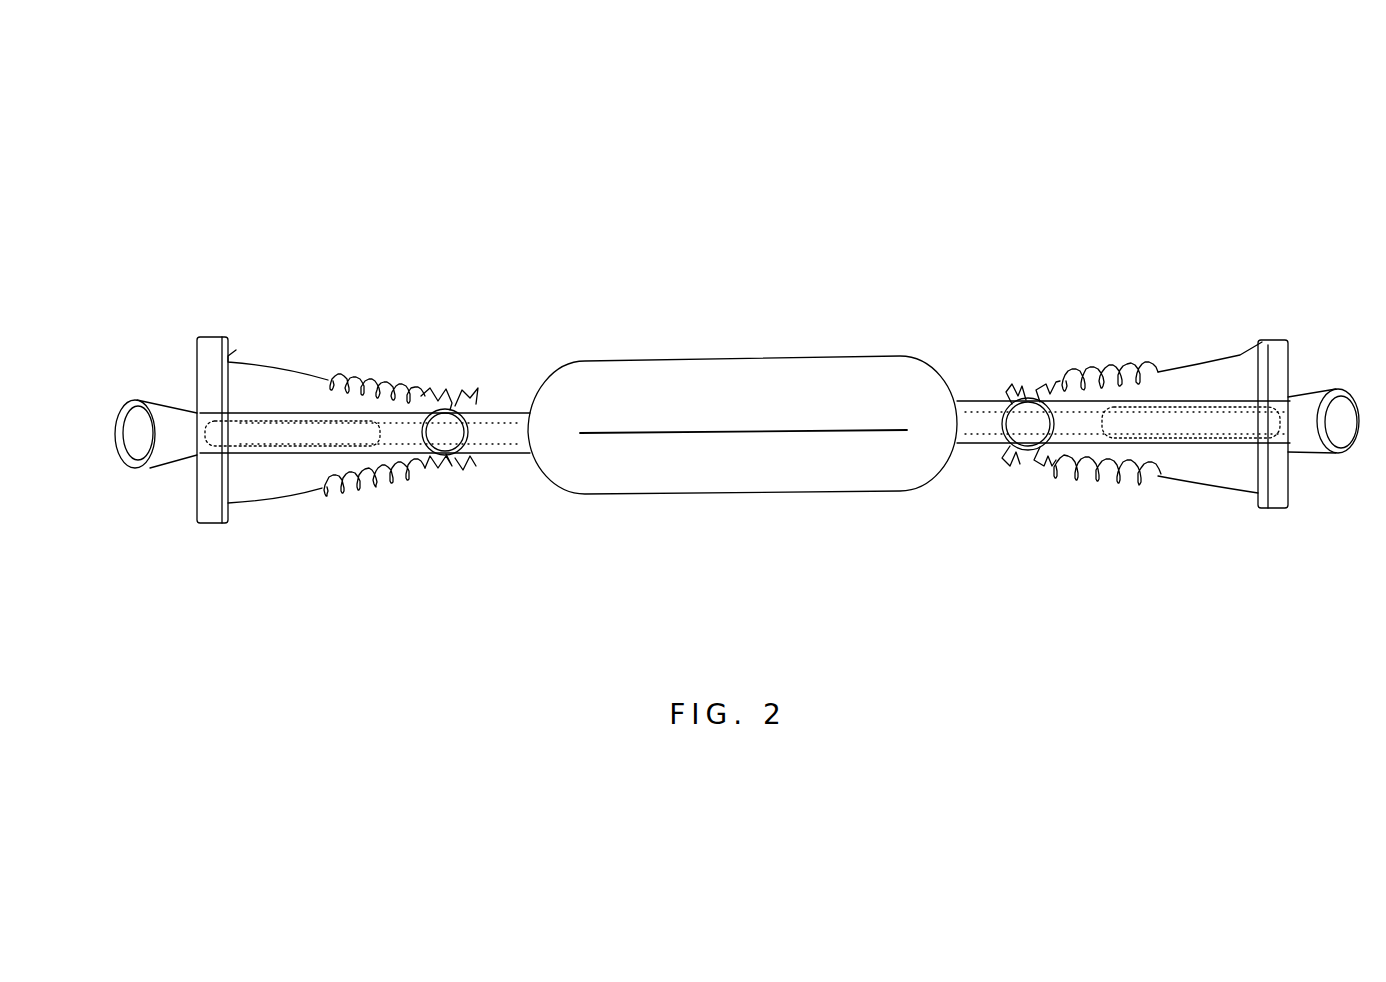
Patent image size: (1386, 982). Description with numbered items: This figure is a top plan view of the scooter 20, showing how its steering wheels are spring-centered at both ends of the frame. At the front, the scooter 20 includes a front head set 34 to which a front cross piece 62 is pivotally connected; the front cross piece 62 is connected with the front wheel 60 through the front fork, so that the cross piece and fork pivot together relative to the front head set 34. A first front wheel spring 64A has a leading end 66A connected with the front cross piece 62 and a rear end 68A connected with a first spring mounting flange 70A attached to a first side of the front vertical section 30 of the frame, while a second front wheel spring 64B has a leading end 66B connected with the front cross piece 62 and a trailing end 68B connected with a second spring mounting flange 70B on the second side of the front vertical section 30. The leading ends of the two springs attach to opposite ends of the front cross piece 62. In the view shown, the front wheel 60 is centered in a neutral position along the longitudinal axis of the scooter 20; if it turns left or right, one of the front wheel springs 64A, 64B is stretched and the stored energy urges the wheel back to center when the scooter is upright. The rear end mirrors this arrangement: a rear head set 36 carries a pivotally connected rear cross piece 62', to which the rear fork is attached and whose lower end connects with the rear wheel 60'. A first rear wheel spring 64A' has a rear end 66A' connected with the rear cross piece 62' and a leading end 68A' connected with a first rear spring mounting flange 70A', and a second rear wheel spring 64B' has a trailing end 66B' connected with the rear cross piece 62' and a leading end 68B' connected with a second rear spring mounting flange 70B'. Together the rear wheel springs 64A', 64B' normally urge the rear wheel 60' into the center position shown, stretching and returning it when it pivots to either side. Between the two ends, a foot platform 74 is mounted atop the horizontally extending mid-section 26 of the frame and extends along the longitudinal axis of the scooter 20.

The scooter 20 is at (805, 265).
The foot platform 74 is at (697, 387).
The horizontally extending mid-section 26 is at (502, 430).
The front vertical section 30 is at (1003, 428).
The rear head set 36 is at (135, 450).
The front head set 34 is at (1338, 418).
The rear cross piece 62' is at (163, 395).
The front cross piece 62 is at (1293, 366).
The rear wheel 60' is at (292, 412).
The front wheel 60 is at (1191, 402).
The rear end of first rear spring 66A' is at (273, 305).
The trailing end of second rear wheel spring 66B' is at (275, 558).
The leading end of first front wheel spring 66A is at (1210, 299).
The leading end of second front wheel spring 66B is at (1208, 529).
The first rear wheel spring 64A' is at (374, 320).
The second rear wheel spring 64B' is at (374, 536).
The first front wheel spring 64A is at (1110, 309).
The second front wheel spring 64B is at (1107, 512).
The leading end of first rear spring 68A' is at (440, 324).
The leading end of second rear wheel spring 68B' is at (459, 526).
The rear end of first front wheel spring 68A is at (1035, 321).
The trailing end of second front wheel spring 68B is at (1029, 505).
The first rear spring mounting flange 70A' is at (508, 328).
The second rear spring mounting flange 70B' is at (518, 504).
The first spring mounting flange 70A is at (981, 338).
The second spring mounting flange 70B is at (968, 499).